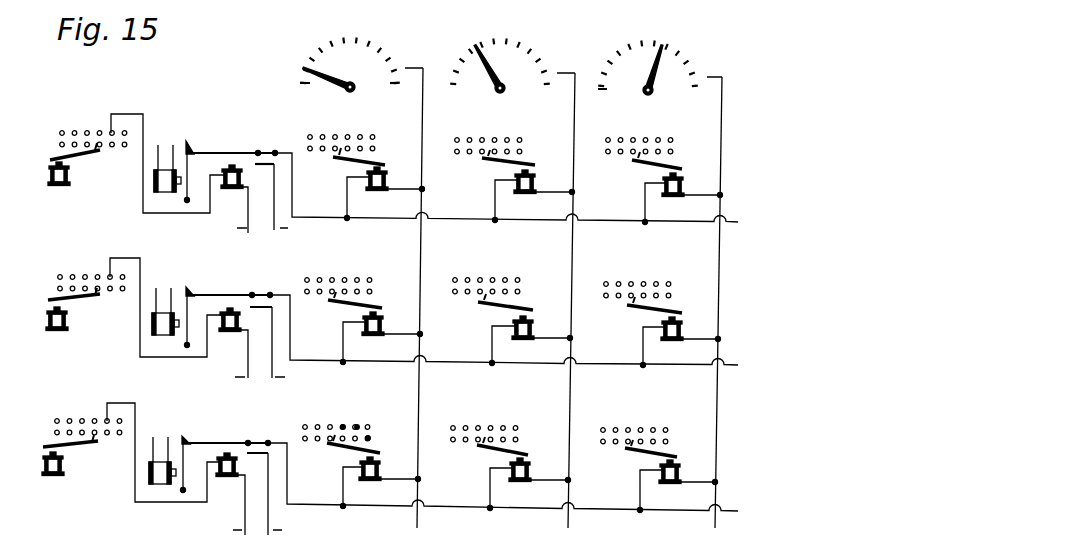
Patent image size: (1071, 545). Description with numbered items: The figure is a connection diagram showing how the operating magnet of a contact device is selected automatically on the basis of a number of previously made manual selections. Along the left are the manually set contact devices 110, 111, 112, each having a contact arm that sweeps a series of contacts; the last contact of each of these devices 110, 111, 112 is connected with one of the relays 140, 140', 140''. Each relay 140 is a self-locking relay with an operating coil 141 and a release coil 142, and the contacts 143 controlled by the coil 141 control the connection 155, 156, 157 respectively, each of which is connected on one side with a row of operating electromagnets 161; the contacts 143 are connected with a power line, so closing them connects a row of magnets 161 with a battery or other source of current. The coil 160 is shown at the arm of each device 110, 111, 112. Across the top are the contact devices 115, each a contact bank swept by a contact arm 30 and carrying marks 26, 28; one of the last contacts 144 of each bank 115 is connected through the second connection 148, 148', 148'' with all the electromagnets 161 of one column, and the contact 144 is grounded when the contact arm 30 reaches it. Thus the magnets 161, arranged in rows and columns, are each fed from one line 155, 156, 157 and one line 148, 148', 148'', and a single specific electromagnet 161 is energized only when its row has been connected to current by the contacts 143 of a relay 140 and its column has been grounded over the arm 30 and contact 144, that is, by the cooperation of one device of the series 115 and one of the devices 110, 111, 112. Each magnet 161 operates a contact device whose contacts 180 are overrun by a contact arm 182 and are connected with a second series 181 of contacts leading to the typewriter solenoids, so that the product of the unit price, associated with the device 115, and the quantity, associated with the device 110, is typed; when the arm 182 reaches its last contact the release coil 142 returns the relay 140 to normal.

The contact device 110 is at (62, 117).
The contact device 111 is at (64, 263).
The contact device 112 is at (69, 407).
The contact device 115 is at (379, 37).
The lower limit mark 26 is at (312, 88).
The upper limit mark 28 is at (388, 75).
The contact arm 30 is at (483, 70).
The end contact 144 is at (405, 68).
The line 148 is at (441, 298).
The line 148' is at (594, 300).
The line 148'' is at (743, 302).
The relay 140 is at (231, 165).
The relay 140' is at (229, 307).
The relay 140'' is at (219, 452).
The operating coil 141 is at (232, 190).
The release coil 142 is at (165, 184).
The contacts 143 is at (256, 161).
The connection 155 is at (378, 218).
The connection 156 is at (378, 362).
The connection 157 is at (372, 506).
The stepping coil 160 is at (70, 176).
The operating electromagnet 161 is at (676, 470).
The contacts 180 is at (519, 293).
The second series of contacts 181 is at (517, 279).
The contact arm 182 is at (333, 298).